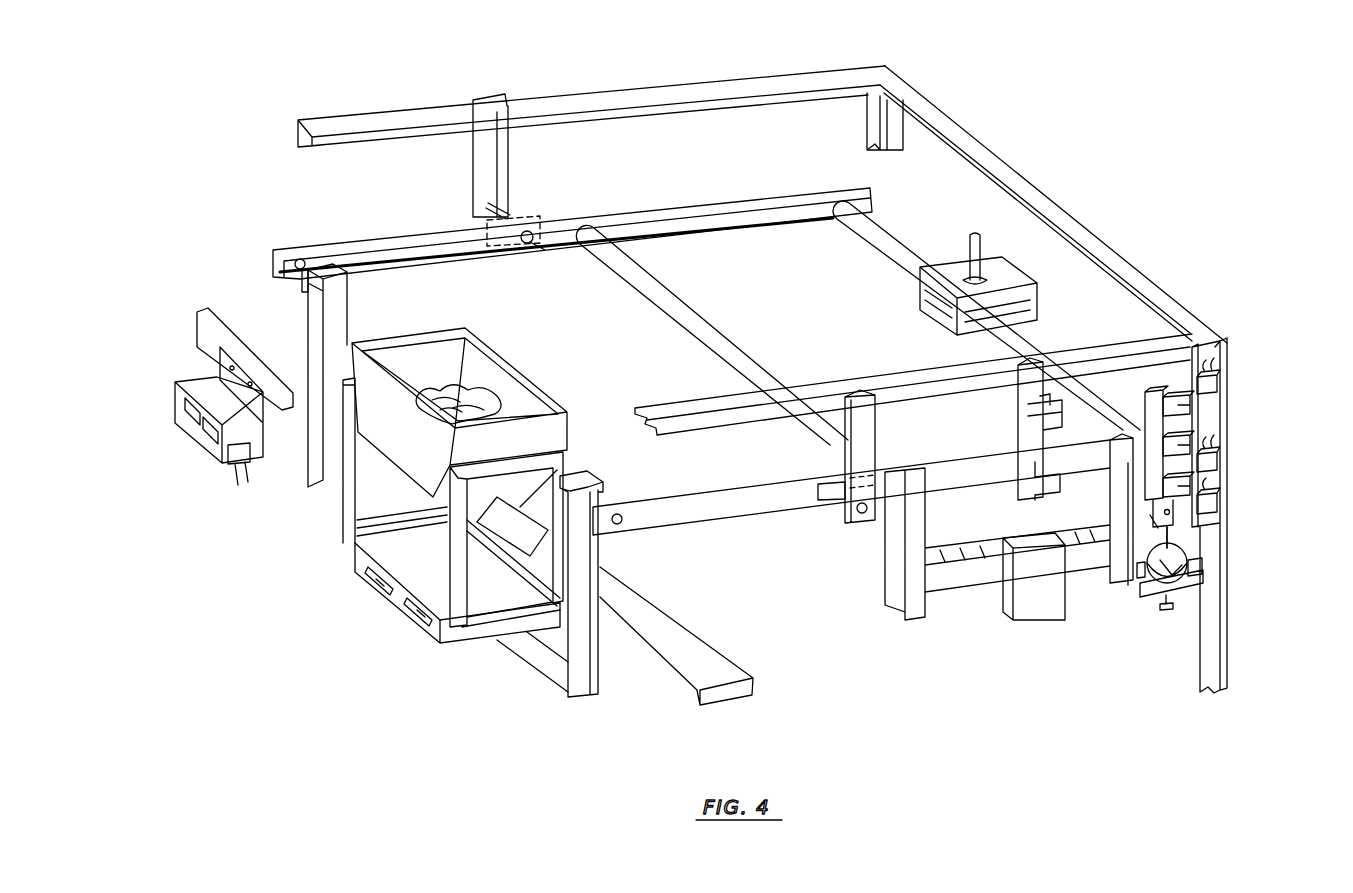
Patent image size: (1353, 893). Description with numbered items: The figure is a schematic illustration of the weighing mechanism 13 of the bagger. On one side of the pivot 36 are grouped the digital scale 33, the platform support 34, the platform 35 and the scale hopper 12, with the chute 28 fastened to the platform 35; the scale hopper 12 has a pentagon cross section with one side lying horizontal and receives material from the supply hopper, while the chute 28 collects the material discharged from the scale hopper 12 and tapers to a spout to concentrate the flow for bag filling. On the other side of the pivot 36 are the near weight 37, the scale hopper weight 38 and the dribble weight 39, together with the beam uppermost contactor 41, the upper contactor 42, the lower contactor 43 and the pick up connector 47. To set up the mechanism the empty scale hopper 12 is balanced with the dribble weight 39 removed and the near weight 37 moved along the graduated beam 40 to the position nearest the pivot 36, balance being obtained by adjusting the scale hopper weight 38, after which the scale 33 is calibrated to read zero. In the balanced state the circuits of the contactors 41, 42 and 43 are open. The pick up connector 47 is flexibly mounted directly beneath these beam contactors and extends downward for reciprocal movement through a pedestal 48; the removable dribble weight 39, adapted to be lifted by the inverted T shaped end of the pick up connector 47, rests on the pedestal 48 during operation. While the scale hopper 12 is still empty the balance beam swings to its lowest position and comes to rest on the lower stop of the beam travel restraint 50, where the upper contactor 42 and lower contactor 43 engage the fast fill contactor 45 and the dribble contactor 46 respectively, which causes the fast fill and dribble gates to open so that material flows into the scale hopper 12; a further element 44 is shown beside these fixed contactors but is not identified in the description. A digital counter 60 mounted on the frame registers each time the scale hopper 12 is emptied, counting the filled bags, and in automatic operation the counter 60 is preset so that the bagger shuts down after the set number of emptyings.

The scale hopper 12 is at (522, 380).
The weighing mechanism 13 is at (760, 503).
The chute 28 is at (683, 670).
The digital scale 33 is at (410, 600).
The platform support 34 is at (328, 502).
The platform 35 is at (380, 553).
The pivot 36 is at (305, 259).
The near weight 37 is at (1053, 612).
The scale hopper weight 38 is at (1010, 268).
The dribble weight 39 is at (1190, 567).
The graduated beam 40 is at (990, 590).
The beam uppermost contactor 41 is at (1192, 405).
The upper contactor 42 is at (1192, 444).
The lower contactor 43 is at (1192, 487).
The switch box 44 is at (1217, 386).
The fast fill contactor 45 is at (1217, 462).
The dribble contactor 46 is at (1217, 506).
The pick up connector 47 is at (1165, 608).
The pedestal 48 is at (1190, 590).
The beam travel restraint 50 is at (1018, 493).
The digital counter 60 is at (190, 440).